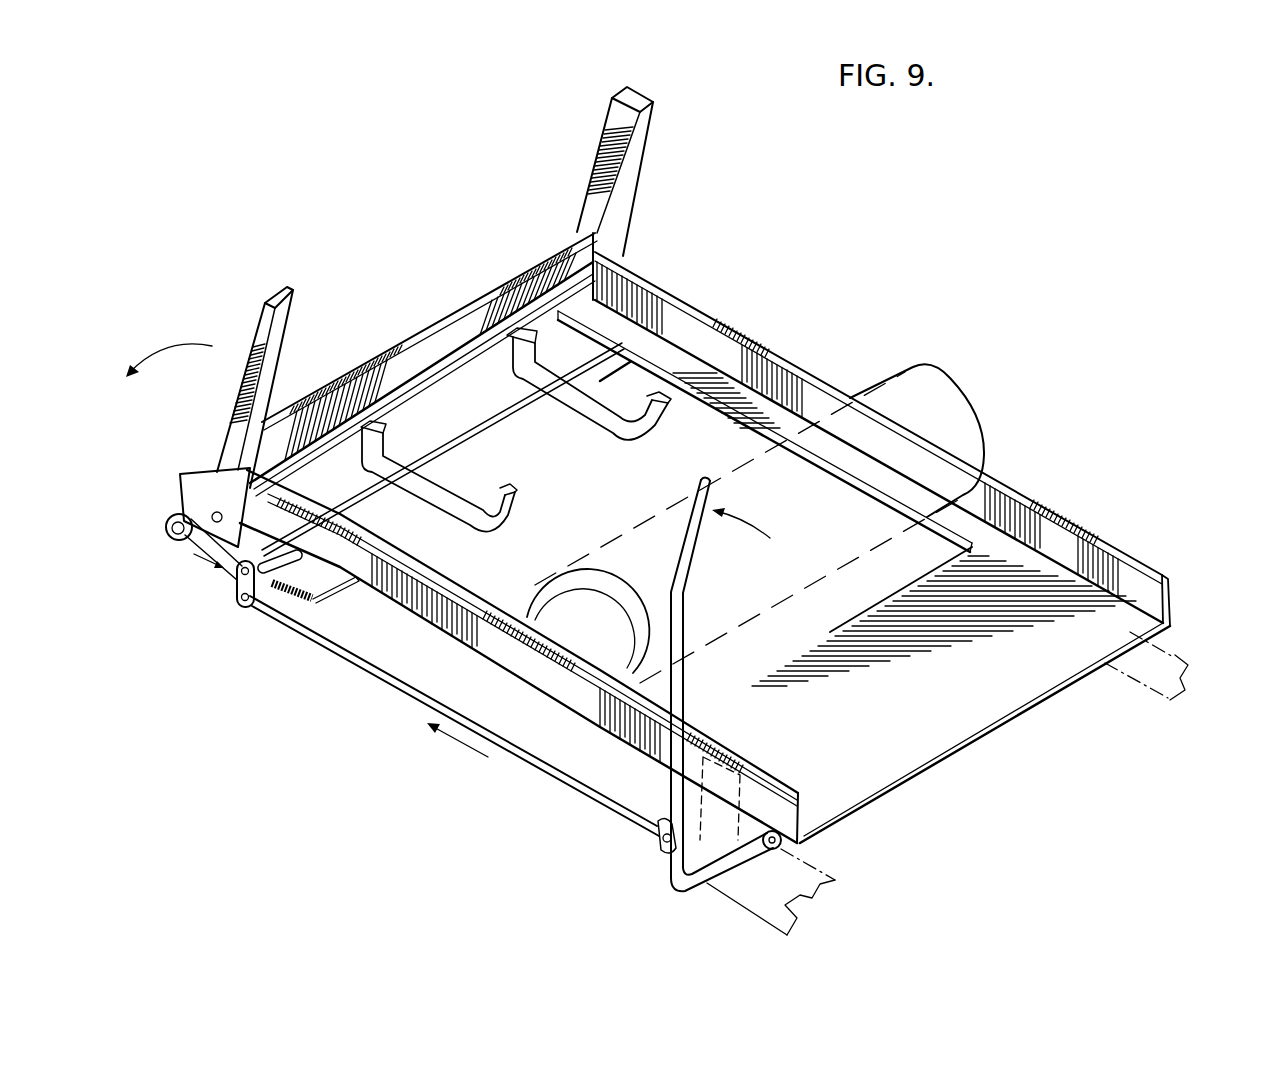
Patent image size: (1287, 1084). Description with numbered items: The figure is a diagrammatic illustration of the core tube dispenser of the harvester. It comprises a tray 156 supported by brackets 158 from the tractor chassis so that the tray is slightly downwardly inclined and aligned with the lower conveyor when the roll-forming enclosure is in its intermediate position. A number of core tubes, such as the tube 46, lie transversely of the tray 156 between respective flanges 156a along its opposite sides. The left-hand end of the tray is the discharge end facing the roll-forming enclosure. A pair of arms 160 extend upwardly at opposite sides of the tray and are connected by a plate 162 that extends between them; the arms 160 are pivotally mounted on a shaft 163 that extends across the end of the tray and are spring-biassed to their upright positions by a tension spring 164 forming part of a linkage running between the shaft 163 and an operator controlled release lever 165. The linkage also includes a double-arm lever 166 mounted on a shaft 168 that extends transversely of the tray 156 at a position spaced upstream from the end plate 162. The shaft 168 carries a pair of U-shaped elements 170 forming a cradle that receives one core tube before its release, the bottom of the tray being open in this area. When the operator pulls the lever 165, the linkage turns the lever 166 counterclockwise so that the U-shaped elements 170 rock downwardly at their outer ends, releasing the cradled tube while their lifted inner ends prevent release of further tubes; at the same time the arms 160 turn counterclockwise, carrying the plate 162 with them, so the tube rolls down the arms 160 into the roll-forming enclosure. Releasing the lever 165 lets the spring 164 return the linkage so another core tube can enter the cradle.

The core tube 46 is at (957, 405).
The tray 156 is at (1112, 548).
The flanges 156a is at (1023, 500).
The brackets 158 is at (1173, 663).
The arms 160 is at (608, 97).
The plate 162 is at (460, 310).
The shaft 163 is at (415, 384).
The tension spring 164 is at (290, 598).
The release lever 165 is at (713, 482).
The double-arm lever 166 is at (238, 604).
The shaft 168 is at (627, 343).
The U-shaped elements 170 is at (643, 438).